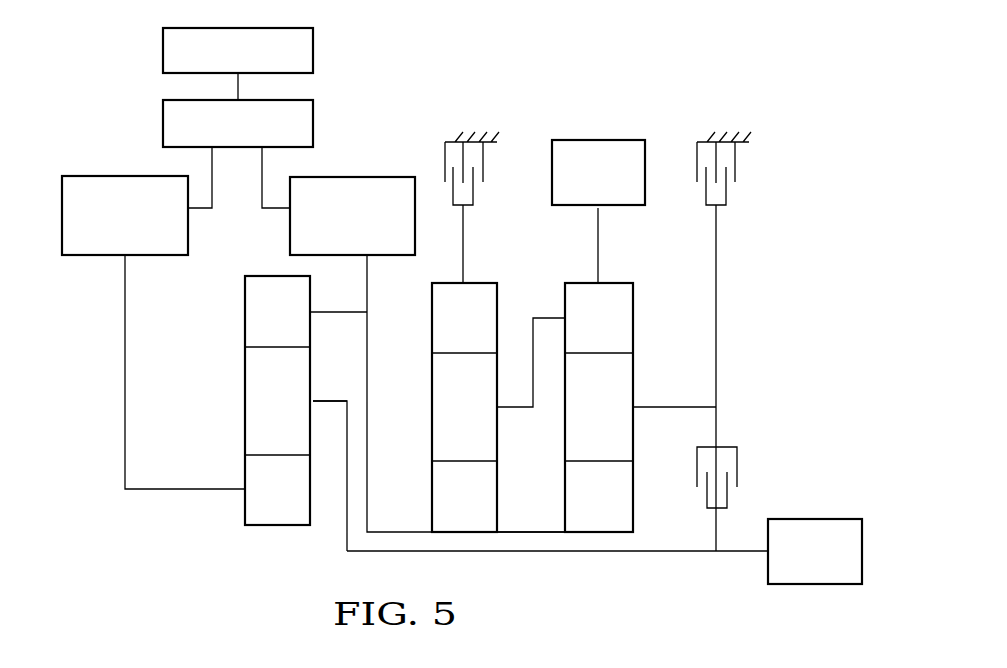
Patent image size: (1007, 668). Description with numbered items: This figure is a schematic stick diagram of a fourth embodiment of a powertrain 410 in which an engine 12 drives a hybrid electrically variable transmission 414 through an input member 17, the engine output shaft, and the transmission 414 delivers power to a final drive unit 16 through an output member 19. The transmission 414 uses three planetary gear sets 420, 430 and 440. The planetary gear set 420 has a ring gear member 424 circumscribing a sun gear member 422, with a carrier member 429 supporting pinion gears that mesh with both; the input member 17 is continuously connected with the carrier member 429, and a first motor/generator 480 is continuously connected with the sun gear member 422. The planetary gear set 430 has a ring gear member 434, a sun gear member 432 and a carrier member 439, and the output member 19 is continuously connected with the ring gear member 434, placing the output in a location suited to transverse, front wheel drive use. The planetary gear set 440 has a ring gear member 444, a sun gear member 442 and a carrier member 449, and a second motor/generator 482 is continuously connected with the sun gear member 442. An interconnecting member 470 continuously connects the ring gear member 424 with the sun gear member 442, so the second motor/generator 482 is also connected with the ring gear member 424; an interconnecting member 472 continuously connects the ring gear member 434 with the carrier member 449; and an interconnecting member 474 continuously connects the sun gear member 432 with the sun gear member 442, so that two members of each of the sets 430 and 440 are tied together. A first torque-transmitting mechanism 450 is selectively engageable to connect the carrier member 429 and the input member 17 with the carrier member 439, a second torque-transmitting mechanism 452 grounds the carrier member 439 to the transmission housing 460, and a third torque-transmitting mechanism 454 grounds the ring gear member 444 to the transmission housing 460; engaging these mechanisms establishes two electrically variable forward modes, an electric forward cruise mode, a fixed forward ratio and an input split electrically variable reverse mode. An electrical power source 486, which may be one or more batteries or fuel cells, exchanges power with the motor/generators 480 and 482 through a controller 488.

The engine 12 is at (804, 508).
The input member 17 is at (748, 553).
The final drive unit 16 is at (605, 133).
The output member 19 is at (602, 248).
The powertrain 410 is at (366, 137).
The transmission 414 is at (538, 106).
The planetary gear set 420 is at (248, 441).
The sun gear member 422 is at (294, 502).
The ring gear member 424 is at (294, 322).
The carrier member 429 is at (294, 411).
The planetary gear set 430 is at (627, 445).
The sun gear member 432 is at (616, 502).
The ring gear member 434 is at (616, 322).
The carrier member 439 is at (616, 411).
The planetary gear set 440 is at (495, 445).
The sun gear member 442 is at (481, 502).
The ring gear member 444 is at (481, 322).
The carrier member 449 is at (481, 411).
The first torque-transmitting mechanism 450 is at (747, 462).
The second torque-transmitting mechanism 452 is at (745, 174).
The third torque-transmitting mechanism 454 is at (499, 172).
The transmission housing 460 is at (455, 136).
The interconnecting member 470 is at (348, 312).
The interconnecting member 472 is at (548, 317).
The interconnecting member 474 is at (545, 532).
The first motor/generator 480 is at (99, 256).
The second motor/generator 482 is at (388, 177).
The electrical power source 486 is at (163, 52).
The controller 488 is at (163, 118).